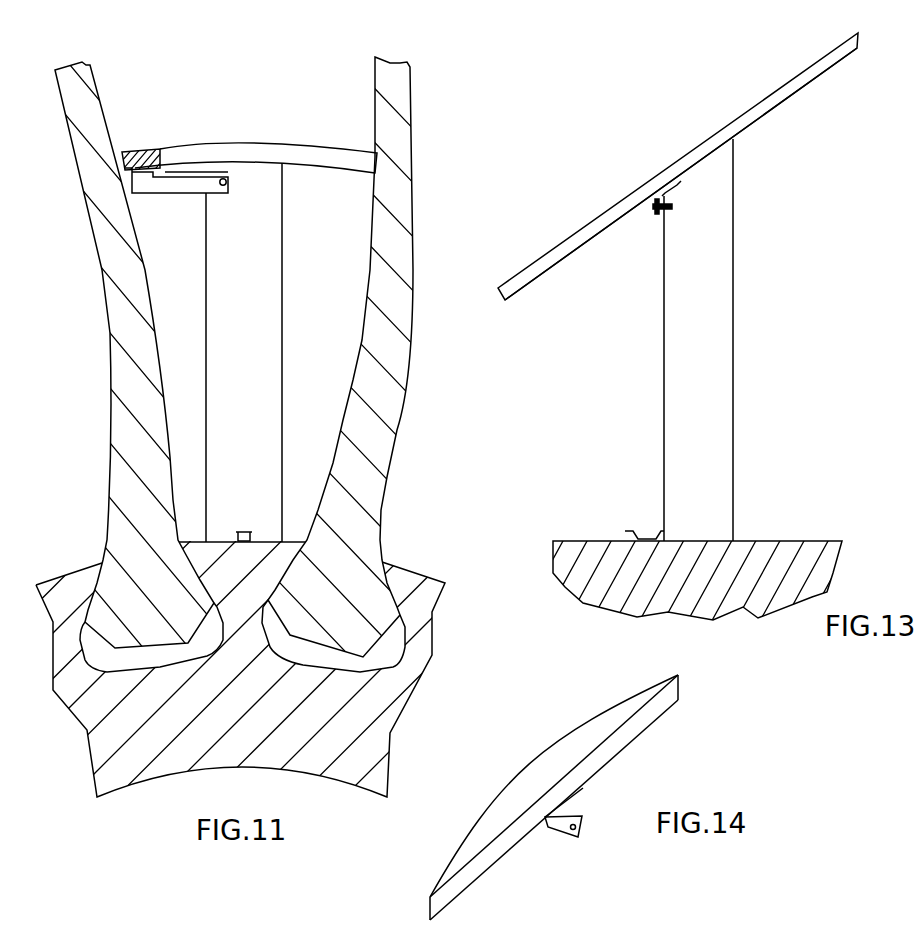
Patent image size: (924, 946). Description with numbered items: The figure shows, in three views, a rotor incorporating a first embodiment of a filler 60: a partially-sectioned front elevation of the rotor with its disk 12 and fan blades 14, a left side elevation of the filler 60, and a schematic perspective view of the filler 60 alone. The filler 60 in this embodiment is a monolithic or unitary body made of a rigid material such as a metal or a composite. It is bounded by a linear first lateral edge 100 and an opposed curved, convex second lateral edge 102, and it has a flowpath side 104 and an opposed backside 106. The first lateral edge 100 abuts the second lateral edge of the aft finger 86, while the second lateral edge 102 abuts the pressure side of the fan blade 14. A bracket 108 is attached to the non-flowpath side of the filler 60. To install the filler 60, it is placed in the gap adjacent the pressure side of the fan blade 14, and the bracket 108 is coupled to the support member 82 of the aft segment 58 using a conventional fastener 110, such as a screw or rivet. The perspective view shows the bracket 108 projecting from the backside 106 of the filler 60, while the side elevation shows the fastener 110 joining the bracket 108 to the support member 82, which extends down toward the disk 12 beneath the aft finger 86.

In FIG. 11, the rotor disk 12 is at (393, 717).
In FIG. 13, the rotor disk 12 is at (833, 553).
In FIG. 11, the fan blade 14 is at (102, 103).
In FIG. 13, the aft segment 58 is at (693, 331).
In FIG. 11, the filler 60 is at (138, 153).
In FIG. 13, the filler 60 is at (563, 248).
In FIG. 14, the filler 60 is at (597, 793).
In FIG. 11, the support member 82 is at (232, 416).
In FIG. 13, the support member 82 is at (727, 332).
In FIG. 11, the aft finger 86 is at (337, 152).
In FIG. 13, the aft finger 86 is at (752, 115).
In FIG. 14, the first lateral edge 100 is at (630, 742).
In FIG. 14, the second lateral edge 102 is at (620, 693).
In FIG. 14, the flowpath side 104 is at (567, 760).
In FIG. 14, the backside 106 is at (502, 863).
In FIG. 11, the bracket 108 is at (173, 193).
In FIG. 13, the bracket 108 is at (662, 213).
In FIG. 14, the bracket 108 is at (572, 837).
In FIG. 11, the fastener 110 is at (223, 178).
In FIG. 13, the fastener 110 is at (655, 205).